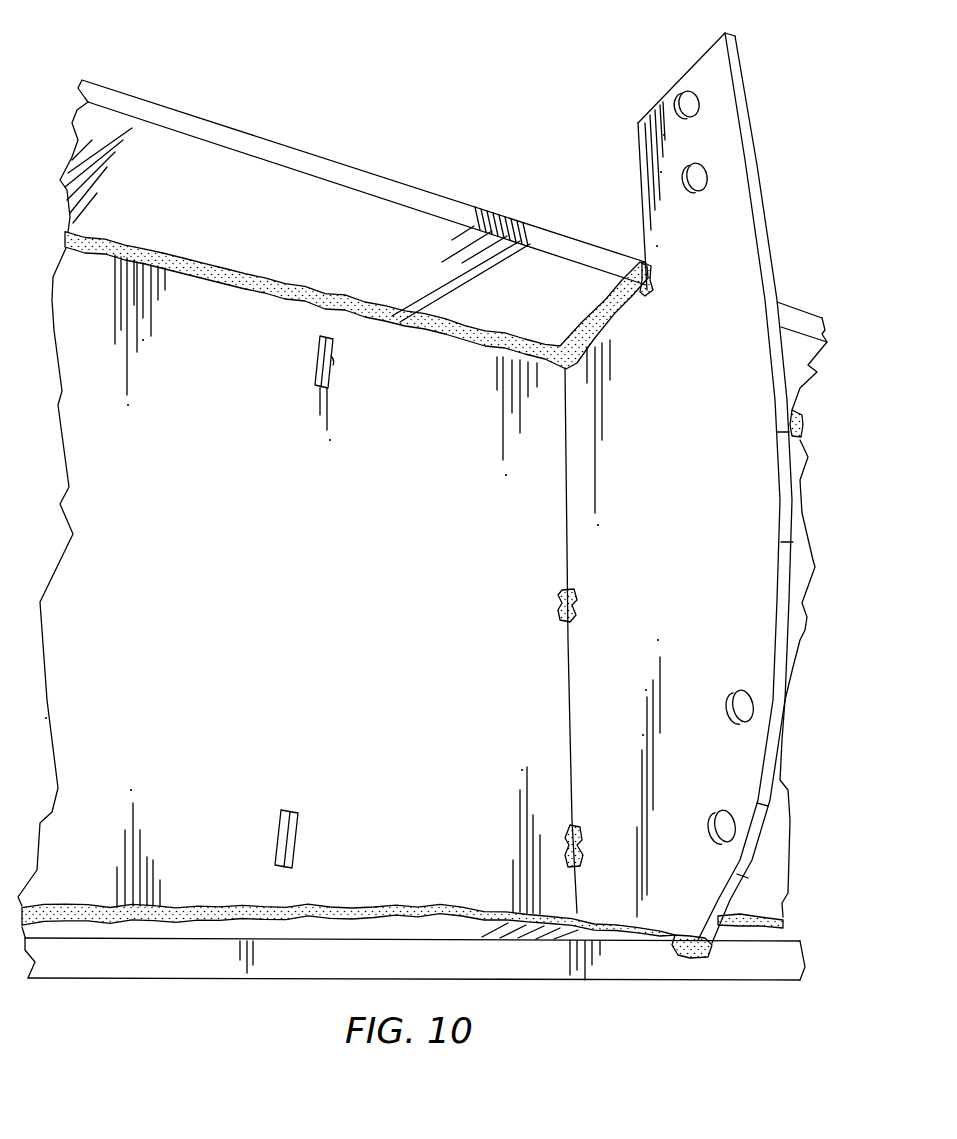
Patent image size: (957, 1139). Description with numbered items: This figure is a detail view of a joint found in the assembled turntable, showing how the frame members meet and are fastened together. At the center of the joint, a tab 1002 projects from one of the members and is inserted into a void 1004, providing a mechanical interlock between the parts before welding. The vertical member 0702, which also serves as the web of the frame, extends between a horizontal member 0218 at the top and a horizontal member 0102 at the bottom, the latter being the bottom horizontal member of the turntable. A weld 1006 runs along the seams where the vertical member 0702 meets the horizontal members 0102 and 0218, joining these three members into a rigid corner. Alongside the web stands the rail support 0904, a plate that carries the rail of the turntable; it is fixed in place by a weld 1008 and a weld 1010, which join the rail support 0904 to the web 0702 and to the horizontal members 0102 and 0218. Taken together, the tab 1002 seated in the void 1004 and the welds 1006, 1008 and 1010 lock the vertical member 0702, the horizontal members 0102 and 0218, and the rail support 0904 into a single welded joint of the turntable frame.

The horizontal member 0102 is at (158, 935).
The horizontal member 0218 is at (298, 187).
The vertical member 0702 is at (172, 382).
The rail support 0904 is at (715, 75).
The tab 1002 is at (325, 336).
The void 1004 is at (332, 357).
The weld 1006 is at (507, 342).
The weld 1008 is at (570, 858).
The weld 1010 is at (640, 926).